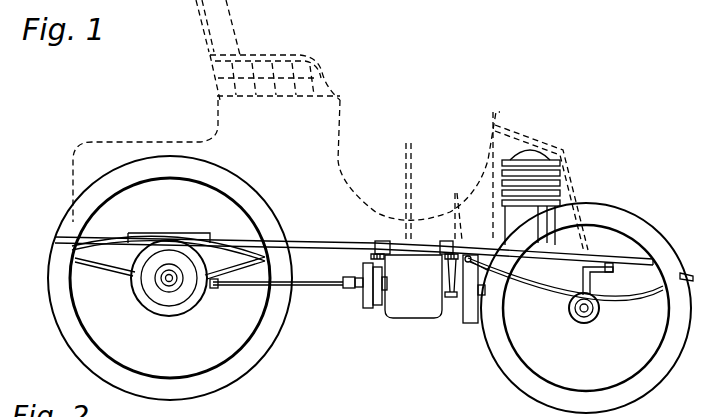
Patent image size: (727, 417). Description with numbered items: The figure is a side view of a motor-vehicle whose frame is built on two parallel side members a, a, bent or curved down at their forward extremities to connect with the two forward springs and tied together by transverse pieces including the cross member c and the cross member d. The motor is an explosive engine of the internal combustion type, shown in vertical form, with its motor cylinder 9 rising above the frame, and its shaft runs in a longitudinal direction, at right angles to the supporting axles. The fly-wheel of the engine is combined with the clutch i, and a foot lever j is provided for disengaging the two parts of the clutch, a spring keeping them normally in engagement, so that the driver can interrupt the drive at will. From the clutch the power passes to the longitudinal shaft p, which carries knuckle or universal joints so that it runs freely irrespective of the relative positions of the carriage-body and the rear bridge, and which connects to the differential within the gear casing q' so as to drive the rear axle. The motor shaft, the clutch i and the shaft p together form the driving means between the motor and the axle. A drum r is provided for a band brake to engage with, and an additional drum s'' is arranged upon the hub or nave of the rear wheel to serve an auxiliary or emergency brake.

The side member a is at (325, 239).
The cross member c is at (380, 239).
The cross member d is at (447, 256).
The foot lever j is at (453, 215).
The motor cylinder 9 is at (547, 188).
The additional drum s'' is at (169, 291).
The longitudinal shaft p is at (327, 287).
The drum r is at (370, 312).
The gear casing q' is at (413, 301).
The clutch i is at (476, 301).